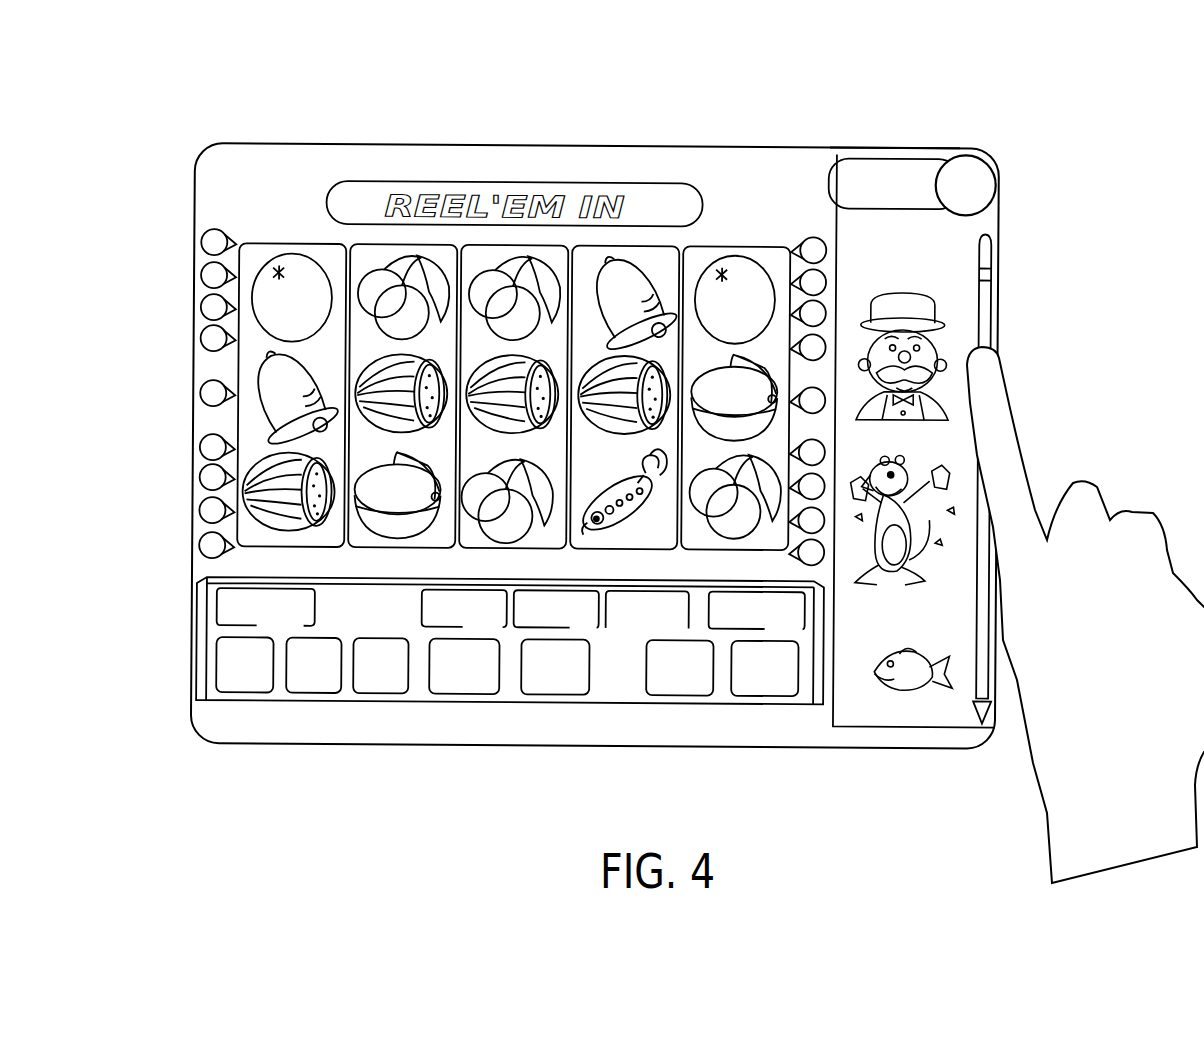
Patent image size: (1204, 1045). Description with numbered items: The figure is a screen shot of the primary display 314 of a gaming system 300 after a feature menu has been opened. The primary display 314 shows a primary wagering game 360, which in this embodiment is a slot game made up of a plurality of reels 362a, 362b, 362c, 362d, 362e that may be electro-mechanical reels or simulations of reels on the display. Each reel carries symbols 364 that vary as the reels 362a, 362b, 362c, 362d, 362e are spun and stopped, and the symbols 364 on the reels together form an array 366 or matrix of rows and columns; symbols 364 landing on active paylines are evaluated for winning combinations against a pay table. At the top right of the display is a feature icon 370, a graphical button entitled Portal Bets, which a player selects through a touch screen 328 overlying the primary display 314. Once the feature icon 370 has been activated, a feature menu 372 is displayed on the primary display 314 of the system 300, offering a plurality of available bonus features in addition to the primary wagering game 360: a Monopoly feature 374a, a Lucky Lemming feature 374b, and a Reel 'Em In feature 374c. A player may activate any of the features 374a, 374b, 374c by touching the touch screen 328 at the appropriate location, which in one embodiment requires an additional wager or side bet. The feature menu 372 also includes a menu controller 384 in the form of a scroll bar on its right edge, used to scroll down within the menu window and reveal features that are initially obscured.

The gaming system 300 is at (243, 108).
The primary display 314 is at (912, 147).
The touch screen 328 is at (188, 788).
The primary wagering game 360 is at (281, 216).
The reel 362a is at (306, 243).
The reel 362b is at (381, 244).
The reel 362c is at (487, 245).
The reel 362d is at (638, 247).
The reel 362e is at (741, 249).
The symbols 364 is at (325, 517).
The array 366 is at (193, 232).
The feature icon 370 is at (935, 186).
The feature menu 372 is at (960, 243).
The Monopoly feature 374a is at (932, 334).
The Lucky Lemming feature 374b is at (947, 460).
The Reel 'Em In feature 374c is at (921, 652).
The menu controller 384 is at (986, 279).